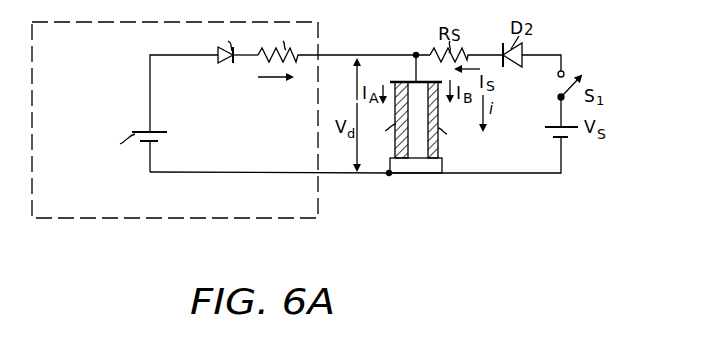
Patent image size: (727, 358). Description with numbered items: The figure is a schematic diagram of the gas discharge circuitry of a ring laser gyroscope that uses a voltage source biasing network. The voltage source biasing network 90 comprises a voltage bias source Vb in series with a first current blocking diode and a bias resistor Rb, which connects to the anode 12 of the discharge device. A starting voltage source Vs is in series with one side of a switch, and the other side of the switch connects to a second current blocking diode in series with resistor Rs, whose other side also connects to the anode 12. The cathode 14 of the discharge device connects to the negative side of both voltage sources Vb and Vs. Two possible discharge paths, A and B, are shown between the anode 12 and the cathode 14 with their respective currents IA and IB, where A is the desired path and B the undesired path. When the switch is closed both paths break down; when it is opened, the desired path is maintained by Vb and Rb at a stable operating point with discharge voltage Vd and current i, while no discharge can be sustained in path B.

The voltage source biasing network 90 is at (175, 120).
The anode 12 is at (400, 82).
The cathode 14 is at (442, 163).